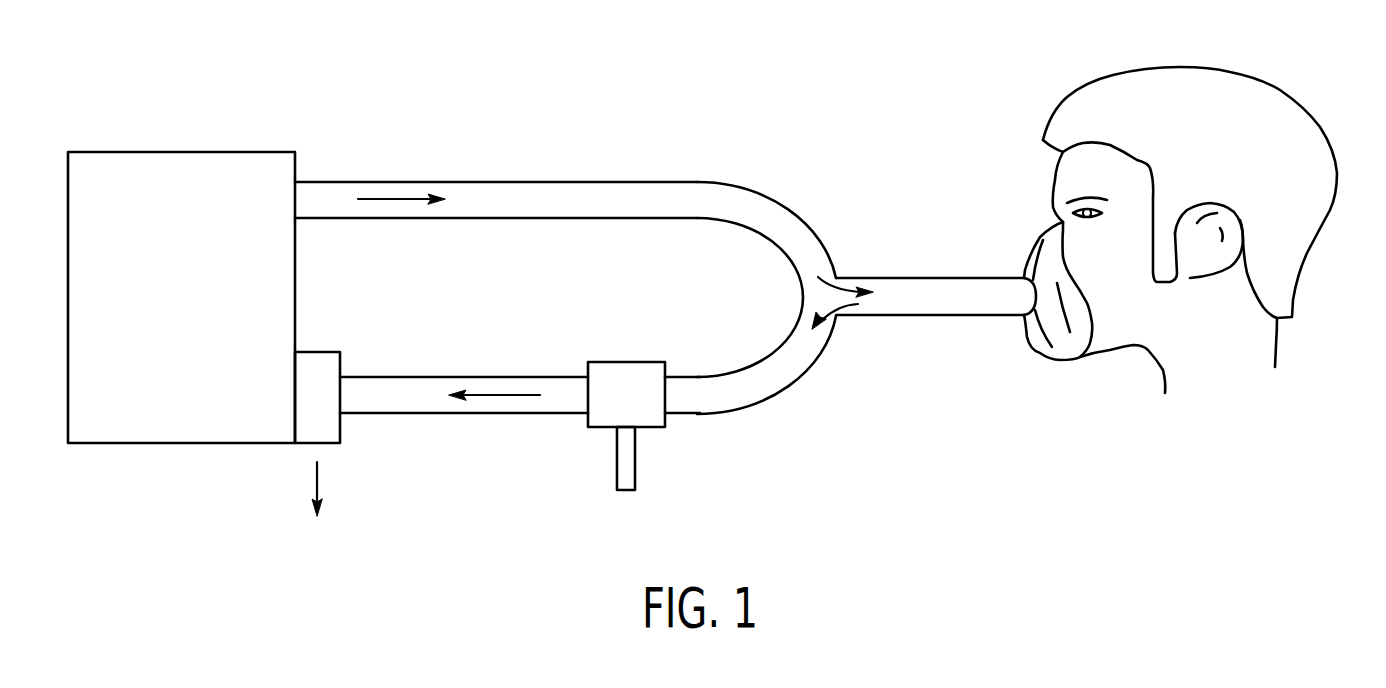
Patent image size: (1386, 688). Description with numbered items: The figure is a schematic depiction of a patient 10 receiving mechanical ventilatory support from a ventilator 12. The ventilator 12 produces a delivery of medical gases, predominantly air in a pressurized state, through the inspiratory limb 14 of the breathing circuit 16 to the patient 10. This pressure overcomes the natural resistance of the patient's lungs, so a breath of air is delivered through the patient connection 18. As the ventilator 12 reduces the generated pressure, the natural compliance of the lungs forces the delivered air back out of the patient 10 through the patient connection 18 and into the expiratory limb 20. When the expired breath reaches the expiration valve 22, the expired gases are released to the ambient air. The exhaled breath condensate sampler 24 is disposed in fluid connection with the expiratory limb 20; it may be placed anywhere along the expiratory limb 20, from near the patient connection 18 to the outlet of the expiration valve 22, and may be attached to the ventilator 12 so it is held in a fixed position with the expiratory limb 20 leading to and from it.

The patient 10 is at (1297, 73).
The ventilator 12 is at (180, 152).
The inspiratory limb 14 is at (623, 192).
The breathing circuit 16 is at (752, 311).
The patient connection 18 is at (1030, 245).
The expiratory limb 20 is at (546, 415).
The expiration valve 22 is at (341, 430).
The exhaled breath condensate (EBC) sampler 24 is at (666, 420).